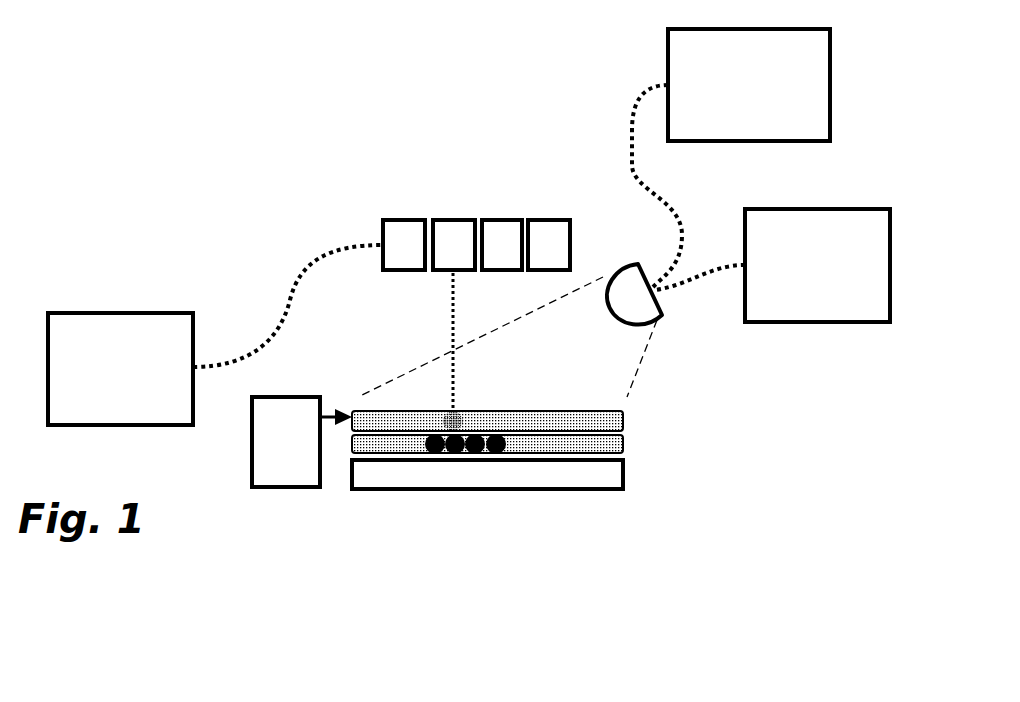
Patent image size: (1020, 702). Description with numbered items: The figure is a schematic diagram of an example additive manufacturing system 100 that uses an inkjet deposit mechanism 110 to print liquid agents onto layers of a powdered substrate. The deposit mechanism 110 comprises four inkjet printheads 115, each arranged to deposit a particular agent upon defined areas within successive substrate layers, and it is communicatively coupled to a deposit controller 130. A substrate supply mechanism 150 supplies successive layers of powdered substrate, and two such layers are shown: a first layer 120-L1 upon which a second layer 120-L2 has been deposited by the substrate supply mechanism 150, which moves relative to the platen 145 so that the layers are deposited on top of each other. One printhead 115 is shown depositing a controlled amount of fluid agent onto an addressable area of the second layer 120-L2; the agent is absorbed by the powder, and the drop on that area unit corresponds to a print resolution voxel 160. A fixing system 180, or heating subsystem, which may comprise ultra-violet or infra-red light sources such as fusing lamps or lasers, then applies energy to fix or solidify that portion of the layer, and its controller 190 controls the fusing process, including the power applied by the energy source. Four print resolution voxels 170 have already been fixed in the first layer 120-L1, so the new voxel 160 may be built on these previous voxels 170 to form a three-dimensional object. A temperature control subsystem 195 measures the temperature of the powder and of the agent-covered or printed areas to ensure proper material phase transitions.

The additive manufacturing system 100 is at (246, 206).
The inkjet deposit mechanism 110 is at (561, 180).
The inkjet printheads 115 is at (452, 218).
The first layer 120-L1 is at (627, 443).
The second layer 120-L2 is at (627, 418).
The deposit controller 130 is at (122, 313).
The platen 145 is at (388, 492).
The substrate supply mechanism 150 is at (302, 442).
The print resolution voxel 160 is at (458, 410).
The fixed print resolution voxels 170 is at (503, 430).
The fixing system 180 is at (662, 315).
The controller 190 is at (820, 209).
The temperature control subsystem 195 is at (832, 82).